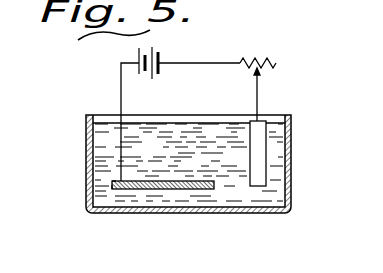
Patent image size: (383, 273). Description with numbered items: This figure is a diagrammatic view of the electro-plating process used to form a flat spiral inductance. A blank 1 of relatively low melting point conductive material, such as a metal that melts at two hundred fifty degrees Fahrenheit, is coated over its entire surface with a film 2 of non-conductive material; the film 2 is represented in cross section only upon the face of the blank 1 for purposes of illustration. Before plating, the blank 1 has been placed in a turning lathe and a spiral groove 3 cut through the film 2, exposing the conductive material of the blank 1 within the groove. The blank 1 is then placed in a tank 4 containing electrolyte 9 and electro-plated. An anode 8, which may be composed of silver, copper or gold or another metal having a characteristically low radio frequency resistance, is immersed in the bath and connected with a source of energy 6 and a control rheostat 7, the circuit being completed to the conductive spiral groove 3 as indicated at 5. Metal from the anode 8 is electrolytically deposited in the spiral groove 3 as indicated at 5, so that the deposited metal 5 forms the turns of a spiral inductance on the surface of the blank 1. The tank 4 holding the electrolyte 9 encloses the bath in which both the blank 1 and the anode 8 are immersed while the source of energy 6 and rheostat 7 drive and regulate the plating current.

The blank 1 is at (148, 189).
The film of non-conductive material 2 is at (112, 186).
The spiral groove 3 is at (160, 180).
The tank 4 is at (291, 148).
The electro-plated spiral 5 is at (112, 182).
The source of energy 6 is at (160, 53).
The control rheostat 7 is at (262, 64).
The anode 8 is at (260, 130).
The electrolyte 9 is at (265, 195).